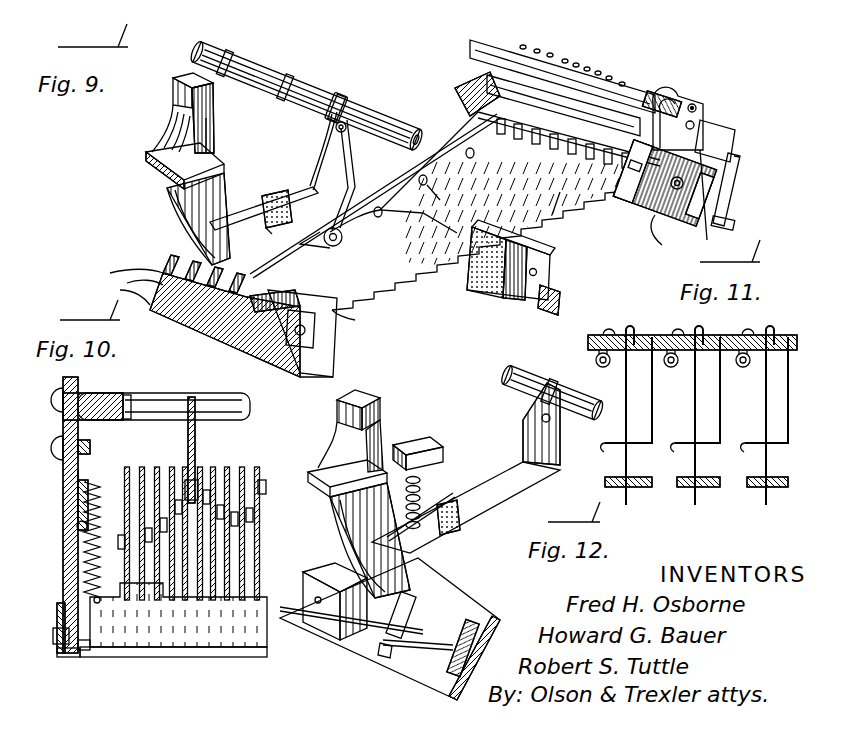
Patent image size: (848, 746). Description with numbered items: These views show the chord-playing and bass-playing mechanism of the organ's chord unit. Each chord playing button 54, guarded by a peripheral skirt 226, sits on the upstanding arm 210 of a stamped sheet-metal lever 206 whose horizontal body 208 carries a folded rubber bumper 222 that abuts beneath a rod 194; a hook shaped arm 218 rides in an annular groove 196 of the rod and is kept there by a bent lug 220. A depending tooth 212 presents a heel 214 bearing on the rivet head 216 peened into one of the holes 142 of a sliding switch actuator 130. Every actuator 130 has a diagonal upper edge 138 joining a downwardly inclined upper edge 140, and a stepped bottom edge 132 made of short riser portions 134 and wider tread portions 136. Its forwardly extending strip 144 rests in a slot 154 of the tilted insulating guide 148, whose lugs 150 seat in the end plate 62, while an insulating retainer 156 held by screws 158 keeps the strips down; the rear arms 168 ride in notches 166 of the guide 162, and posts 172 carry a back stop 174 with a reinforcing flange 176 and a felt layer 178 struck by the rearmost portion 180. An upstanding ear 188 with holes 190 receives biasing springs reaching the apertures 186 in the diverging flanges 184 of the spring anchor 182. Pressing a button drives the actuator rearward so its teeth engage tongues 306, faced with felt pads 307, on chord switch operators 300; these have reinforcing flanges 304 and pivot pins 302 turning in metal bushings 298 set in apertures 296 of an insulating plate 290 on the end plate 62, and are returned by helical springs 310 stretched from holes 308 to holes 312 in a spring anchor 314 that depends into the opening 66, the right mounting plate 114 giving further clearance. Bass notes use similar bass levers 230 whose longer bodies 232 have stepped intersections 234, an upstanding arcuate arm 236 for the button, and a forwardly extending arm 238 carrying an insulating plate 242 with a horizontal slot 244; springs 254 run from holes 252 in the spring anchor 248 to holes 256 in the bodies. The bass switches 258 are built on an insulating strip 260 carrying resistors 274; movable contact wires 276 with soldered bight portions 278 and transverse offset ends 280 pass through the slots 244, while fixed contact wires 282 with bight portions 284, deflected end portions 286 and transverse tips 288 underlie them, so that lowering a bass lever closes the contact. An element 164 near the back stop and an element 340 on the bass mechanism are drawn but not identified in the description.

In FIG. 9, the chord playing button 54 is at (185, 84).
In FIG. 10, the end plate 62 is at (64, 478).
In FIG. 10, the opening in end plate 66 is at (72, 503).
In FIG. 10, the right mounting plate 114 is at (62, 425).
In FIG. 9, the sliding switch actuator 130 is at (522, 190).
In FIG. 10, the sliding switch actuator 130 is at (150, 467).
In FIG. 9, the bottom edge 132 is at (474, 251).
In FIG. 9, the riser portion 134 is at (548, 224).
In FIG. 9, the tread portion 136 is at (352, 312).
In FIG. 9, the upper edge 138 is at (492, 114).
In FIG. 9, the downwardly inclined upper edge 140 is at (561, 191).
In FIG. 9, the holes 142 is at (456, 200).
In FIG. 9, the forwardly extending strip 144 is at (258, 284).
In FIG. 9, the insulating guide 148 is at (272, 355).
In FIG. 9, the lugs 150 is at (334, 358).
In FIG. 9, the slots 154 is at (140, 274).
In FIG. 9, the insulating retainer 156 is at (287, 290).
In FIG. 12, the insulating retainer 156 is at (380, 398).
In FIG. 9, the screws 158 is at (334, 338).
In FIG. 9, the guide 162 is at (666, 220).
In FIG. 9, the plate 164 is at (712, 235).
In FIG. 9, the vertical notches 166 is at (560, 78).
In FIG. 9, the arms 168 is at (684, 98).
In FIG. 9, the posts 172 is at (681, 235).
In FIG. 9, the back stop 174 is at (735, 179).
In FIG. 9, the reinforcing flange 176 is at (730, 222).
In FIG. 9, the felt layer 178 is at (712, 146).
In FIG. 9, the rearmost portion of actuator 180 is at (738, 157).
In FIG. 9, the spring anchor 182 is at (600, 78).
In FIG. 9, the diverging flanges 184 is at (648, 95).
In FIG. 9, the apertures 186 is at (550, 54).
In FIG. 9, the upstanding ear 188 is at (696, 126).
In FIG. 9, the holes 190 is at (698, 108).
In FIG. 9, the rods 194 is at (262, 67).
In FIG. 10, the rods 194 is at (216, 396).
In FIG. 12, the rods 194 is at (552, 392).
In FIG. 9, the annular grooves 196 is at (229, 56).
In FIG. 10, the annular grooves 196 is at (166, 398).
In FIG. 9, the lever 206 is at (170, 214).
In FIG. 10, the lever 206 is at (197, 439).
In FIG. 9, the body 208 is at (300, 190).
In FIG. 9, the upstanding arm 210 is at (185, 195).
In FIG. 9, the depending tooth 212 is at (313, 190).
In FIG. 9, the heel 214 is at (352, 178).
In FIG. 9, the rivet head 216 is at (340, 228).
In FIG. 10, the rivet head 216 is at (262, 495).
In FIG. 9, the hook shaped arm 218 is at (356, 122).
In FIG. 9, the lug 220 is at (337, 106).
In FIG. 9, the rubber bumper 222 is at (265, 198).
In FIG. 9, the peripheral skirt 226 is at (148, 158).
In FIG. 12, the bass lever 230 is at (515, 512).
In FIG. 12, the body of bass lever 232 is at (540, 416).
In FIG. 12, the stepped intersection 234 is at (458, 508).
In FIG. 12, the upstanding arcuate arm 236 is at (345, 520).
In FIG. 12, the forwardly extending arm 238 is at (357, 540).
In FIG. 11, the insulating switch operator plate 242 is at (615, 488).
In FIG. 12, the insulating switch operator plate 242 is at (345, 640).
In FIG. 11, the horizontal slot 244 is at (690, 490).
In FIG. 12, the horizontal slot 244 is at (450, 490).
In FIG. 12, the spring anchor 248 is at (393, 435).
In FIG. 12, the holes 252 is at (418, 448).
In FIG. 12, the springs 254 is at (406, 498).
In FIG. 12, the holes 256 is at (422, 530).
In FIG. 12, the bass switches 258 is at (488, 612).
In FIG. 12, the insulating strip 260 is at (458, 595).
In FIG. 11, the resistors 274 is at (672, 373).
In FIG. 12, the resistors 274 is at (430, 652).
In FIG. 11, the movable contact wire 276 is at (696, 421).
In FIG. 12, the movable contact wire 276 is at (390, 645).
In FIG. 11, the bight portions 278 is at (656, 335).
In FIG. 11, the transverse offset ends 280 is at (722, 335).
In FIG. 11, the fixed contact wire 282 is at (652, 404).
In FIG. 12, the fixed contact wire 282 is at (448, 645).
In FIG. 11, the bight portions 284 is at (650, 362).
In FIG. 11, the deflected end portions 286 is at (752, 379).
In FIG. 11, the transverse tips 288 is at (665, 460).
In FIG. 12, the transverse tips 288 is at (390, 660).
In FIG. 10, the insulating plate 290 is at (58, 625).
In FIG. 10, the apertures 296 is at (62, 658).
In FIG. 10, the metal bushings 298 is at (53, 636).
In FIG. 9, the chord switch operator 300 is at (470, 270).
In FIG. 10, the chord switch operator 300 is at (192, 635).
In FIG. 9, the pivot pins 302 is at (548, 288).
In FIG. 10, the pivot pins 302 is at (88, 652).
In FIG. 9, the reinforcing flanges 304 is at (552, 316).
In FIG. 10, the reinforcing flanges 304 is at (248, 658).
In FIG. 9, the tongues 306 is at (522, 252).
In FIG. 10, the tongues 306 is at (150, 583).
In FIG. 9, the felt pad 307 is at (490, 290).
In FIG. 10, the holes 308 is at (94, 598).
In FIG. 10, the helical springs 310 is at (82, 552).
In FIG. 10, the holes 312 is at (76, 526).
In FIG. 10, the spring anchor 314 is at (88, 482).
In FIG. 12, the block 340 is at (305, 585).